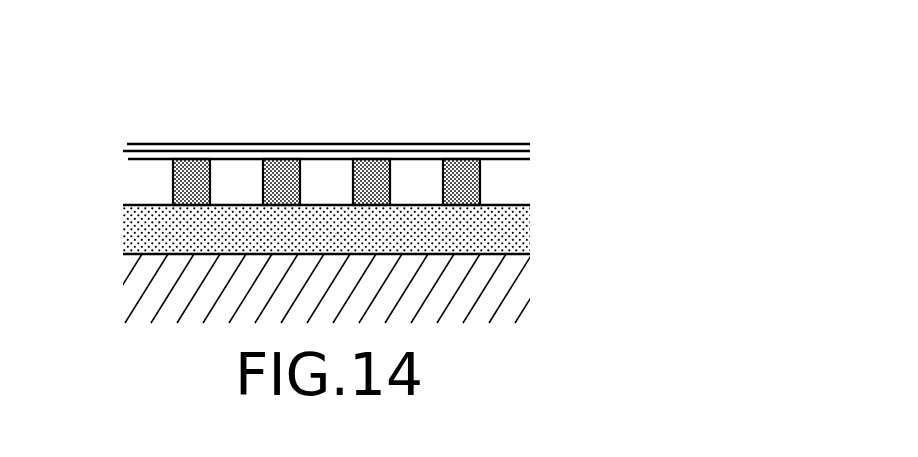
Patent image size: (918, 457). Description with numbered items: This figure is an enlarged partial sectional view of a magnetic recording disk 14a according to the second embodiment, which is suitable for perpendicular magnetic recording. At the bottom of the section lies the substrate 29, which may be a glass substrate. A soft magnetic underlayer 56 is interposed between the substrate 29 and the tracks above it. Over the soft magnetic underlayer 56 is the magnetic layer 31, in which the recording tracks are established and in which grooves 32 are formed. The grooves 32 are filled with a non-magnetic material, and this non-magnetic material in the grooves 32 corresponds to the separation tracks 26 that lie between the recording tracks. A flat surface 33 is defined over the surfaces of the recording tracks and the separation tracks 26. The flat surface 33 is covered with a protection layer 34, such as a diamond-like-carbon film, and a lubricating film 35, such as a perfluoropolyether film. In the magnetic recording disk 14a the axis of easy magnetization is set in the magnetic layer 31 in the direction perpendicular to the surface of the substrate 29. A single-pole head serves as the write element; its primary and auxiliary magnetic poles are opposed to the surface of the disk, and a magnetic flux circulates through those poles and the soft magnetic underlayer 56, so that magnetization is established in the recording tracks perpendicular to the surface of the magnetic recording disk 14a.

The magnetic recording disk 14a is at (112, 86).
The lubricating film 35 is at (127, 143).
The protection layer 34 is at (127, 151).
The magnetic layer 31 is at (130, 159).
The flat surface 33 is at (530, 160).
The grooves 32 is at (177, 159).
The separation tracks 26 is at (195, 159).
The soft magnetic underlayer 56 is at (507, 205).
The substrate 29 is at (510, 250).